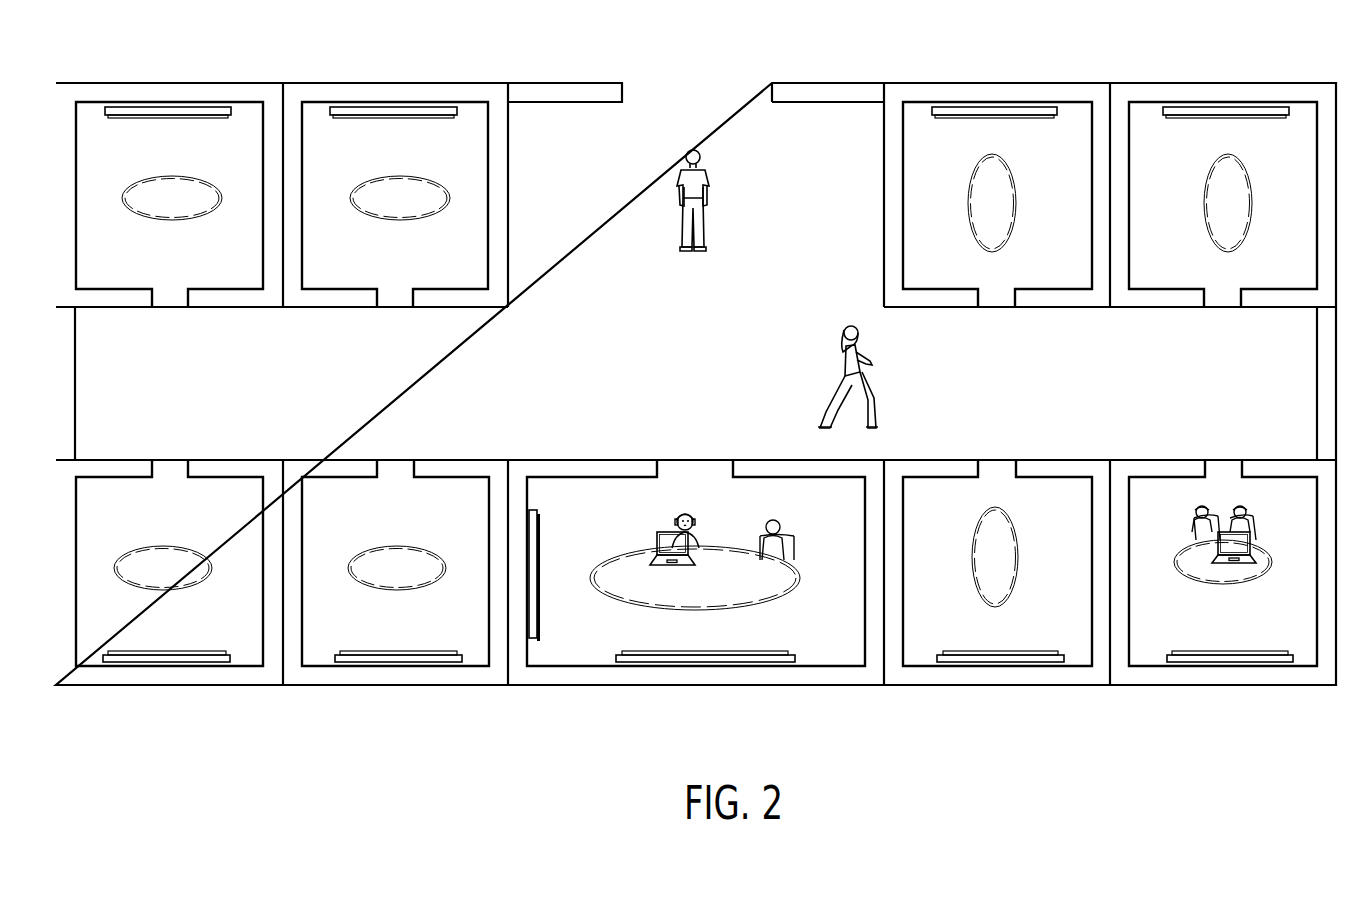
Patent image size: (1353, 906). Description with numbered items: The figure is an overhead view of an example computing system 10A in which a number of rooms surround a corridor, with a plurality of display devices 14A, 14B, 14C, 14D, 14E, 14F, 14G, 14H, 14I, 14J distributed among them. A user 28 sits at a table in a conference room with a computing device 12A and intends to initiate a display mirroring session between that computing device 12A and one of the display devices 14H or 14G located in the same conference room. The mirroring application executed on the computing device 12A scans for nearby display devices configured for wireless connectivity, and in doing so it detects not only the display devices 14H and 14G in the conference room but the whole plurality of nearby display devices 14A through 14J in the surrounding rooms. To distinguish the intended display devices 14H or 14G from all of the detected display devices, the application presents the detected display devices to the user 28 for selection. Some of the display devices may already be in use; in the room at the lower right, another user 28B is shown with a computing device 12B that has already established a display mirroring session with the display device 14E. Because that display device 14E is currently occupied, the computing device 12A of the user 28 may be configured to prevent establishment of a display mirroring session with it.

The computing system 10A is at (712, 44).
The display device 14A is at (168, 108).
The display device 14B is at (388, 108).
The display device 14C is at (992, 108).
The display device 14D is at (1225, 108).
The display device 14E is at (1228, 657).
The display device 14F is at (998, 657).
The display device 14G is at (697, 657).
The display device 14H is at (532, 547).
The display device 14I is at (400, 657).
The display device 14J is at (167, 657).
The computing device 12A is at (663, 542).
The computing device 12B is at (1255, 553).
The user 28 is at (687, 512).
The other user 28B is at (1248, 510).